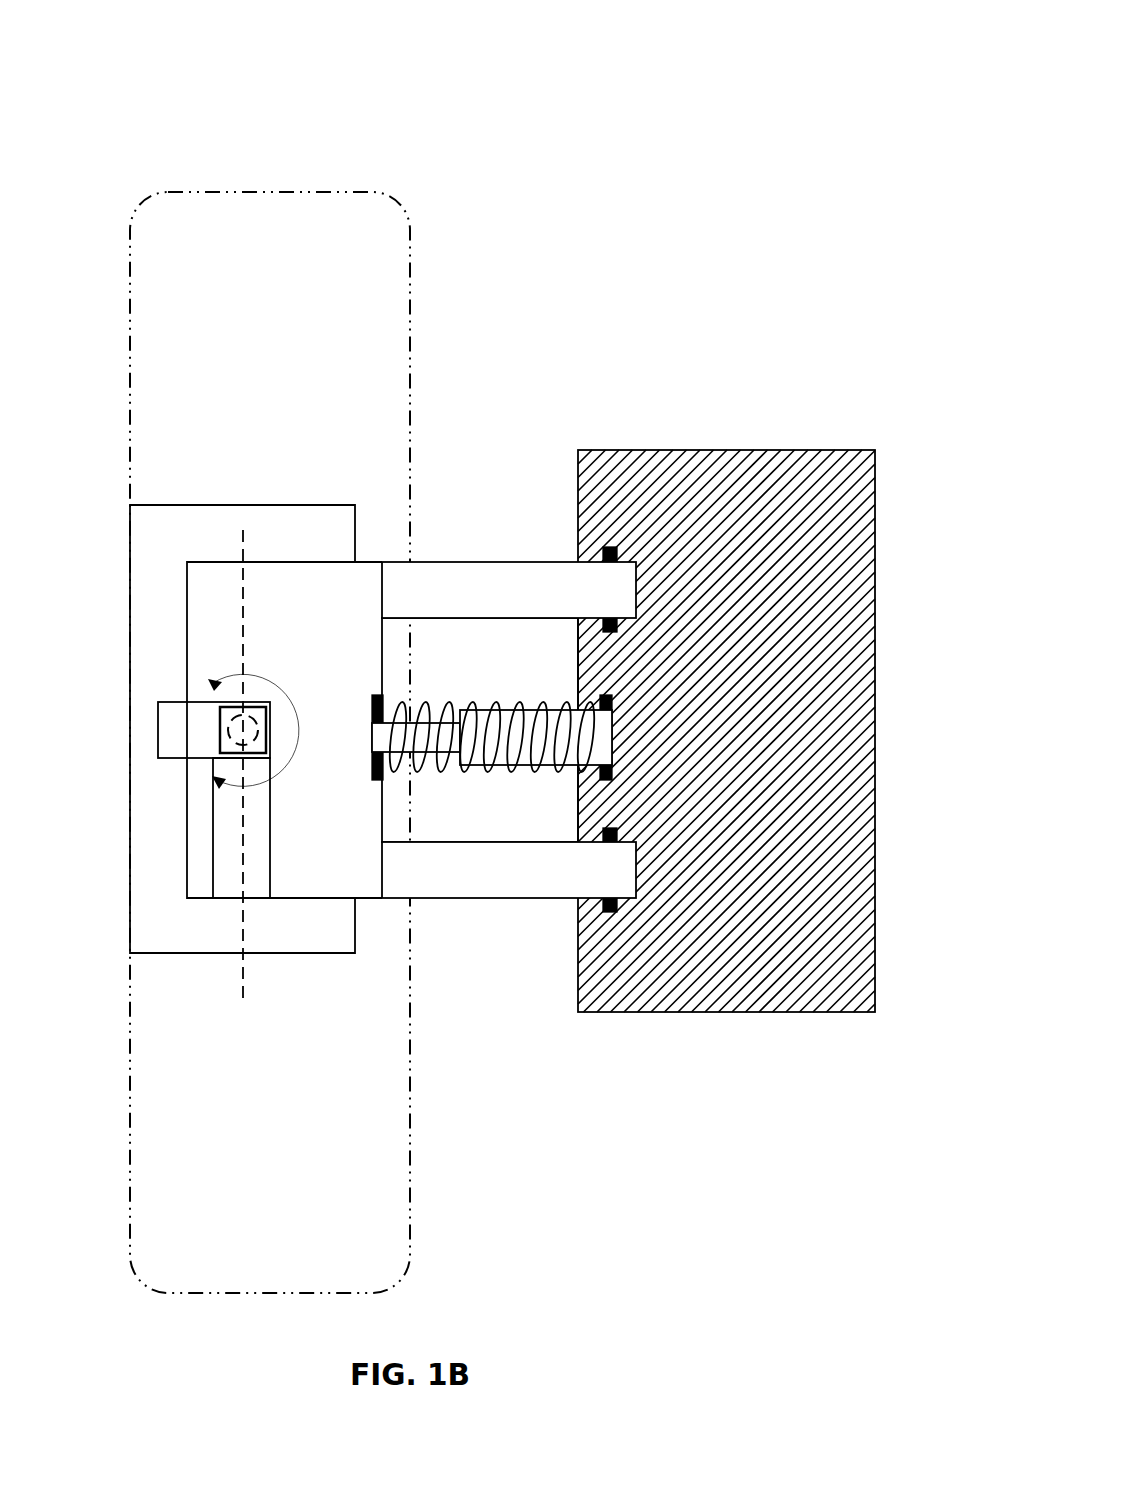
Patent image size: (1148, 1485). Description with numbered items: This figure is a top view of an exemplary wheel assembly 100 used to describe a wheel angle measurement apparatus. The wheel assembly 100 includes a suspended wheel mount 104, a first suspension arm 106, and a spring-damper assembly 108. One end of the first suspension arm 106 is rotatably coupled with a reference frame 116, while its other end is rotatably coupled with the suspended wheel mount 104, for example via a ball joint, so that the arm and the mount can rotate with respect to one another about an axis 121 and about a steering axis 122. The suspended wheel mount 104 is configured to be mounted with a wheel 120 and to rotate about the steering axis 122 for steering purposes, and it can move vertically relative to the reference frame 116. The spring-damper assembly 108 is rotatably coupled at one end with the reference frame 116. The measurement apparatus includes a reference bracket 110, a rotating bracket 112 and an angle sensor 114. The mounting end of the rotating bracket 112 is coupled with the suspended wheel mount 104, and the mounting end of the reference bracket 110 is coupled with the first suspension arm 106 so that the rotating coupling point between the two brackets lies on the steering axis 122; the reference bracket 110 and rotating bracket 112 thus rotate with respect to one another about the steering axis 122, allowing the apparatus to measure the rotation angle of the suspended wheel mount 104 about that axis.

The wheel assembly 100 is at (390, 99).
The suspended wheel mount 104 is at (242, 505).
The first suspension arm 106 is at (462, 618).
The spring-damper assembly 108 is at (510, 770).
The reference bracket 110 is at (270, 850).
The rotating bracket 112 is at (173, 762).
The angle sensor 114 is at (263, 735).
The reference frame 116 is at (728, 1012).
The wheel 120 is at (410, 1118).
The axis 121 is at (246, 622).
The steering axis 122 is at (252, 717).